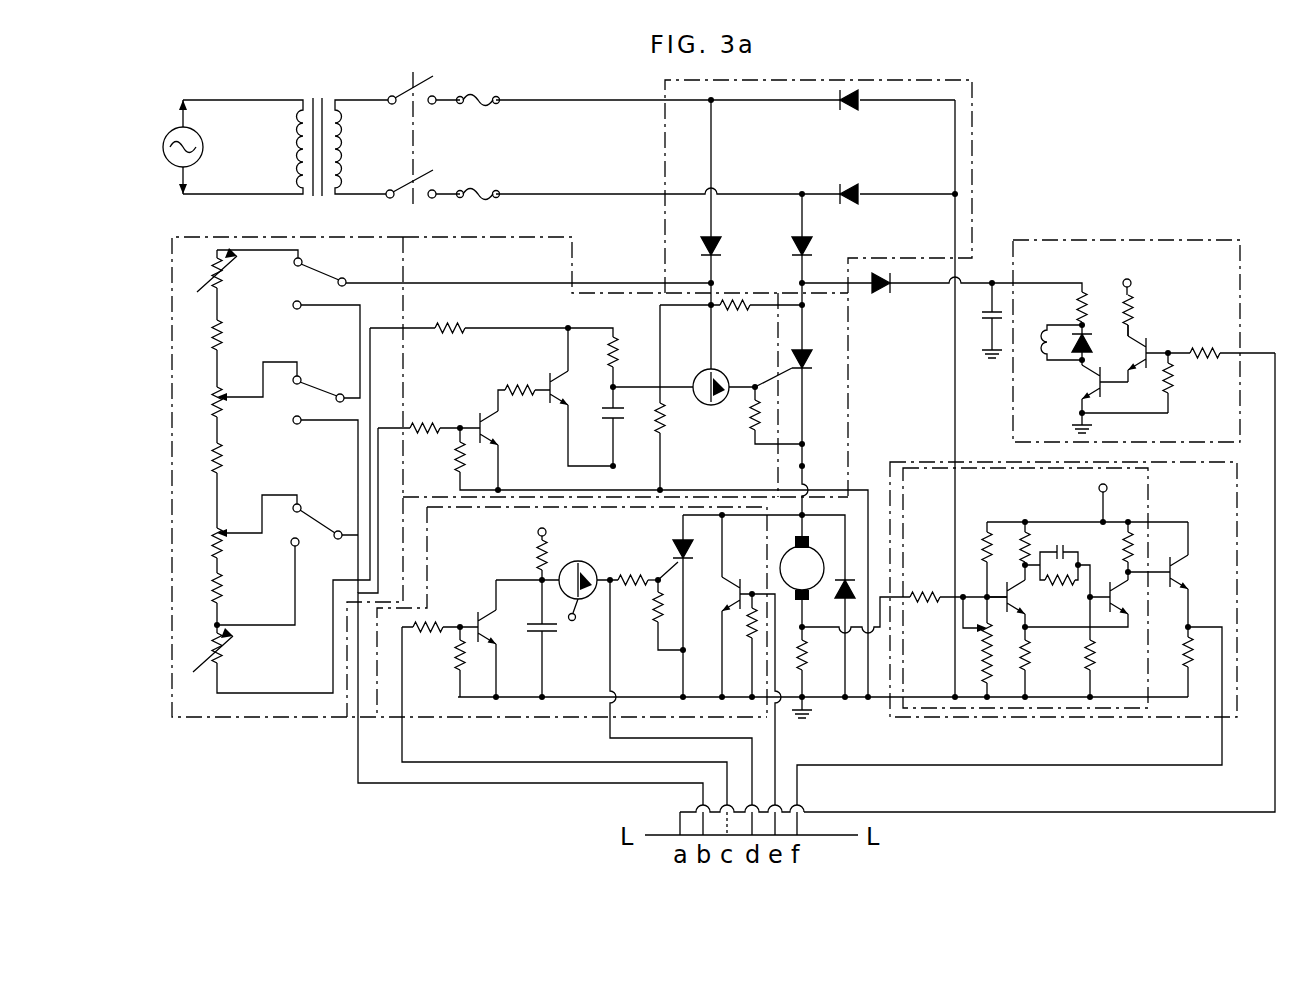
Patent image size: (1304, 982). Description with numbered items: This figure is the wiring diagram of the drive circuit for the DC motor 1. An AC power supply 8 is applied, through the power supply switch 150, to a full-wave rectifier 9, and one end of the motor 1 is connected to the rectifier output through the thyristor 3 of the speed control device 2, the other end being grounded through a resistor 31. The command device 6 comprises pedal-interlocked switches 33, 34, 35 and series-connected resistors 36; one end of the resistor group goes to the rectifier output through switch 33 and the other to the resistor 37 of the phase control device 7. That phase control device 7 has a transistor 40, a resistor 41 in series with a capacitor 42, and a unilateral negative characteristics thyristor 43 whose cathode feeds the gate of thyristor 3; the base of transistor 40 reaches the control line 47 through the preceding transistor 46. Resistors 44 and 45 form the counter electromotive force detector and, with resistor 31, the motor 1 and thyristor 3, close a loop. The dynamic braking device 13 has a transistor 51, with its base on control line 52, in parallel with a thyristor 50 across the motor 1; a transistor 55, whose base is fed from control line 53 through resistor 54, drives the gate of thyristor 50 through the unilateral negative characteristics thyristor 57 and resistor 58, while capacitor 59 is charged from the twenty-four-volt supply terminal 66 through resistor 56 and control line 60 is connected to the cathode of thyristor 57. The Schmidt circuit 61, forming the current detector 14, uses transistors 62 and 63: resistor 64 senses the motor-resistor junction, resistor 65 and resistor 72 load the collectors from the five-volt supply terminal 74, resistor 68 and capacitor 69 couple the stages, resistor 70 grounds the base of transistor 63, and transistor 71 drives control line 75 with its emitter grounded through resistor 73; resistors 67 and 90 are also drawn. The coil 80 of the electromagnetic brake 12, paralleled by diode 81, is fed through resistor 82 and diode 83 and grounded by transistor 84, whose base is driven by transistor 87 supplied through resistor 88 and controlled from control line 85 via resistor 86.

The DC motor 1 is at (810, 550).
The speed control device 2 is at (848, 412).
The thyristor 3 is at (812, 359).
The command device 6 is at (172, 270).
The phase control device 7 is at (601, 270).
The AC power supply 8 is at (163, 148).
The full-wave rectifier 9 is at (972, 190).
The electromagnetic brake 12 is at (1242, 289).
The dynamic braking device 13 is at (527, 717).
The current detector 14 is at (1276, 526).
The resistor 31 is at (808, 650).
The switch 33 is at (303, 267).
The switch 34 is at (316, 390).
The switch 35 is at (314, 522).
The resistors 36 is at (222, 336).
The resistor 37 is at (452, 327).
The transistor 40 is at (557, 389).
The resistor 41 is at (617, 352).
The capacitor 42 is at (605, 413).
The unilateral negative characteristics thyristor 43 is at (712, 370).
The resistor 44 is at (728, 312).
The resistor 45 is at (668, 421).
The transistor 46 is at (490, 431).
The control line 47 is at (439, 785).
The thyristor 50 is at (672, 550).
The transistor 51 is at (718, 595).
The control line 52 is at (777, 748).
The control line 53 is at (508, 762).
The resistor 54 is at (429, 632).
The transistor 55 is at (495, 633).
The resistor 56 is at (538, 556).
The unilateral negative characteristics thyristor 57 is at (586, 599).
The resistor 58 is at (630, 589).
The capacitor 59 is at (557, 630).
The control line 60 is at (608, 732).
The Schmidt circuit 61 is at (1115, 716).
The transistor 62 is at (1026, 596).
The transistor 63 is at (1131, 605).
The resistor 64 is at (922, 596).
The resistor 65 is at (1022, 548).
The DC power supply terminal 66 is at (539, 531).
The resistor 67 is at (1032, 658).
The resistor 68 is at (1063, 588).
The capacitor 69 is at (1065, 552).
The resistor 70 is at (1096, 658).
The transistor 71 is at (1187, 576).
The resistor 72 is at (1126, 552).
The resistor 73 is at (1185, 654).
The DC power supply terminal 74 is at (1098, 488).
The control line 75 is at (930, 765).
The coil 80 is at (1044, 332).
The diode 81 is at (1087, 340).
The resistor 82 is at (1086, 302).
The diode 83 is at (884, 288).
The transistor 84 is at (1088, 386).
The control line 85 is at (1023, 812).
The resistor 86 is at (1202, 352).
The transistor 87 is at (1138, 352).
The resistor 88 is at (1136, 319).
The resistor 90 is at (1176, 390).
The power supply switch 150 is at (392, 98).